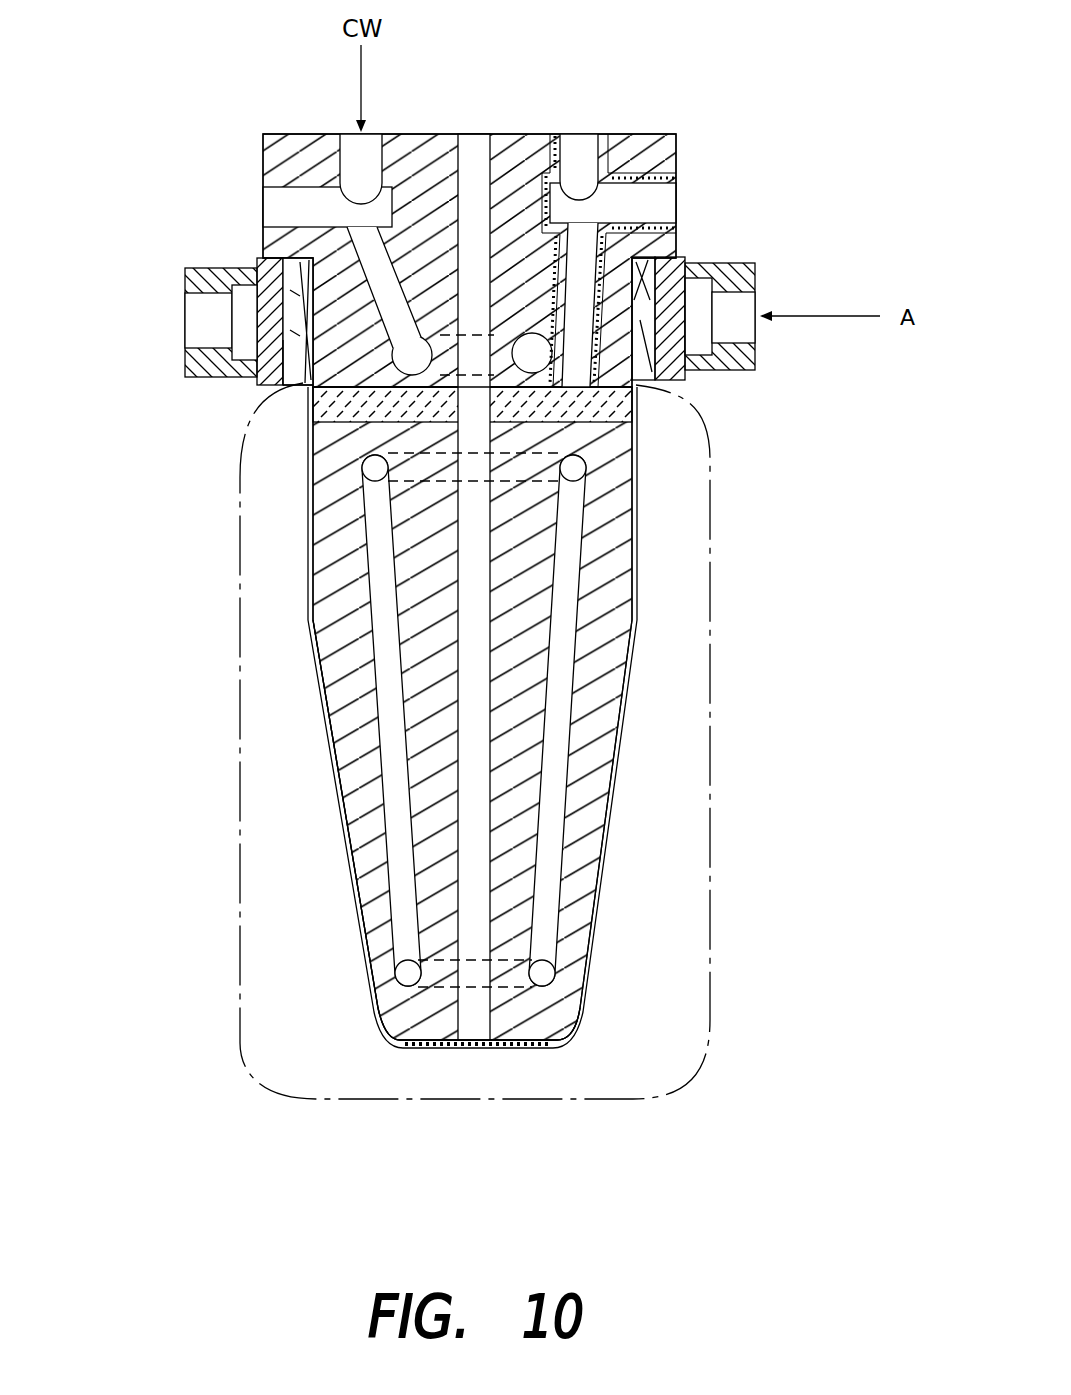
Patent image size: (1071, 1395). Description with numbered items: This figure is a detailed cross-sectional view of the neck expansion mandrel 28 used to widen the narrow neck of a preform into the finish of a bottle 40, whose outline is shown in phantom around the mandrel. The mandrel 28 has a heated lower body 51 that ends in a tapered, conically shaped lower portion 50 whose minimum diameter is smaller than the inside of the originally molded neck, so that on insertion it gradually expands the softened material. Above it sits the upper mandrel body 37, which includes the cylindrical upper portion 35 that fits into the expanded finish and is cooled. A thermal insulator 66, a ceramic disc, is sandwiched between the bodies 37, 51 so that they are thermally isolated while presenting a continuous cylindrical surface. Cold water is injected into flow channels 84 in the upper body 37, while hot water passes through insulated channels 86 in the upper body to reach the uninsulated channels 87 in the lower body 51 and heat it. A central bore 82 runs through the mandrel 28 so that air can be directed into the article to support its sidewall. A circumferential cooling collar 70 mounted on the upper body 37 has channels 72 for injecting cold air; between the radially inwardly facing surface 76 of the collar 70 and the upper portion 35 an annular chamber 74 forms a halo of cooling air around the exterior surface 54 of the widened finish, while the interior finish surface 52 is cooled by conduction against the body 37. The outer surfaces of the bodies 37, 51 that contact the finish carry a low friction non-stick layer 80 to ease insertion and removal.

The mandrel 28 is at (760, 60).
The central bore 82 is at (470, 133).
The upper mandrel body 37 is at (683, 140).
The insulated channels 86 is at (680, 200).
The flow channels 84 is at (263, 202).
The interior finish surface 52 is at (327, 268).
The exterior surface 54 is at (297, 297).
The cylindrical upper portion 35 is at (615, 298).
The channels 72 is at (185, 322).
The chamber 74 is at (282, 388).
The cooling collar 70 is at (760, 375).
The radially inwardly facing surface 76 is at (660, 385).
The thermal insulator 66 is at (320, 410).
The layer of low friction non-stick material 80 is at (638, 557).
The uninsulated channels 87 is at (575, 633).
The lower body 51 is at (317, 709).
The bottle 40 is at (712, 870).
The tapered lower portion 50 is at (582, 980).